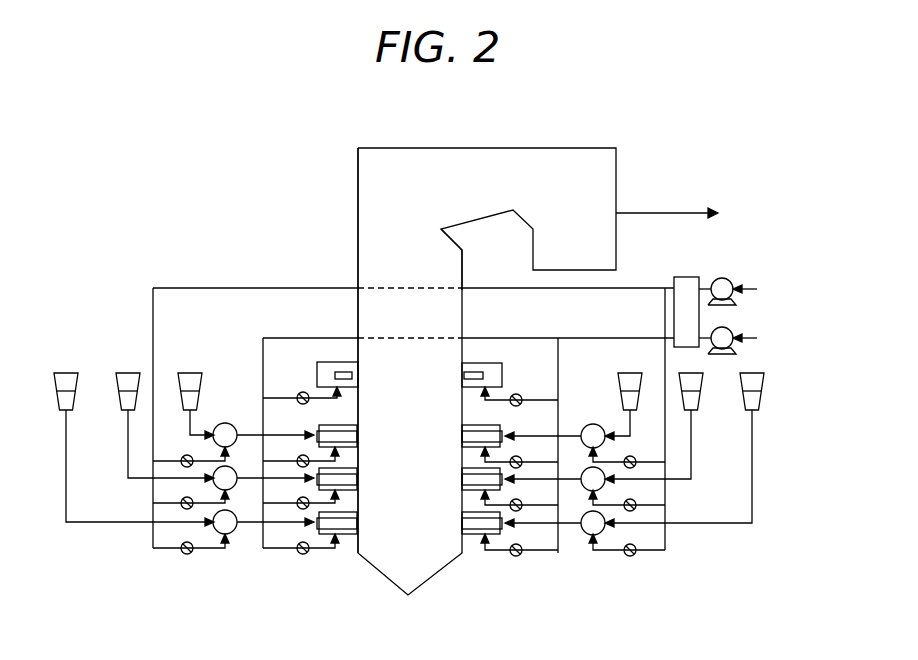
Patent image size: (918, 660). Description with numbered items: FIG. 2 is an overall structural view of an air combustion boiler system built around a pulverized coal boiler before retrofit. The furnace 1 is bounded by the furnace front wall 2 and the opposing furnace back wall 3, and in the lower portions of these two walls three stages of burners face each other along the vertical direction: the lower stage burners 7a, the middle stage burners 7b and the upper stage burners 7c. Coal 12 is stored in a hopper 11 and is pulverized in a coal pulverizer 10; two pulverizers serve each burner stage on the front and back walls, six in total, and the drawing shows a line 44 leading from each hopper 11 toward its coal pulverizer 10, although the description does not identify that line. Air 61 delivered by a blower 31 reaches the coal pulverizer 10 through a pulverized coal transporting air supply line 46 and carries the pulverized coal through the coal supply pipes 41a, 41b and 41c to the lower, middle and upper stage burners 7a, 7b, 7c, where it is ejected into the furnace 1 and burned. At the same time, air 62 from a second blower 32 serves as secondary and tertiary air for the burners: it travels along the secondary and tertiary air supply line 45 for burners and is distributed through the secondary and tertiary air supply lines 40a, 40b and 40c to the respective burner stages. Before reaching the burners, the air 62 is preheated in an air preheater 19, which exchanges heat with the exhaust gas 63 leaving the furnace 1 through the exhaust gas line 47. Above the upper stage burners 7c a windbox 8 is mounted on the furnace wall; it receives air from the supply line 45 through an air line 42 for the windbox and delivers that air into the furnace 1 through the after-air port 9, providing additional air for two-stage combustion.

The furnace 1 is at (446, 130).
The furnace front wall 2 is at (358, 267).
The furnace back wall 3 is at (462, 270).
The lower stage burners 7a is at (352, 524).
The middle stage burners 7b is at (352, 480).
The upper stage burners 7c is at (352, 437).
The windbox 8 is at (338, 362).
The after-air port 9 is at (352, 376).
The coal pulverizer 10 is at (242, 402).
The hopper 11 is at (63, 372).
The coal 12 is at (72, 398).
The air preheater 19 is at (688, 277).
The blower 31 is at (725, 278).
The blower 32 is at (735, 348).
The secondary and tertiary air supply line for burners 40a is at (341, 547).
The secondary and tertiary air supply line for burners 40b is at (341, 503).
The secondary and tertiary air supply line for burners 40c is at (341, 459).
The coal supply pipe 41a is at (296, 524).
The coal supply pipe 41b is at (288, 480).
The coal supply pipe 41c is at (288, 436).
The air line for windbox 42 is at (343, 398).
The coal supply pipe 44 is at (83, 522).
The secondary and tertiary air supply line for burners 45 is at (578, 333).
The pulverized coal transporting air supply line 46 is at (653, 290).
The exhaust gas line 47 is at (658, 212).
The air 61 is at (779, 289).
The air 62 is at (779, 338).
The exhaust gas 63 is at (785, 216).